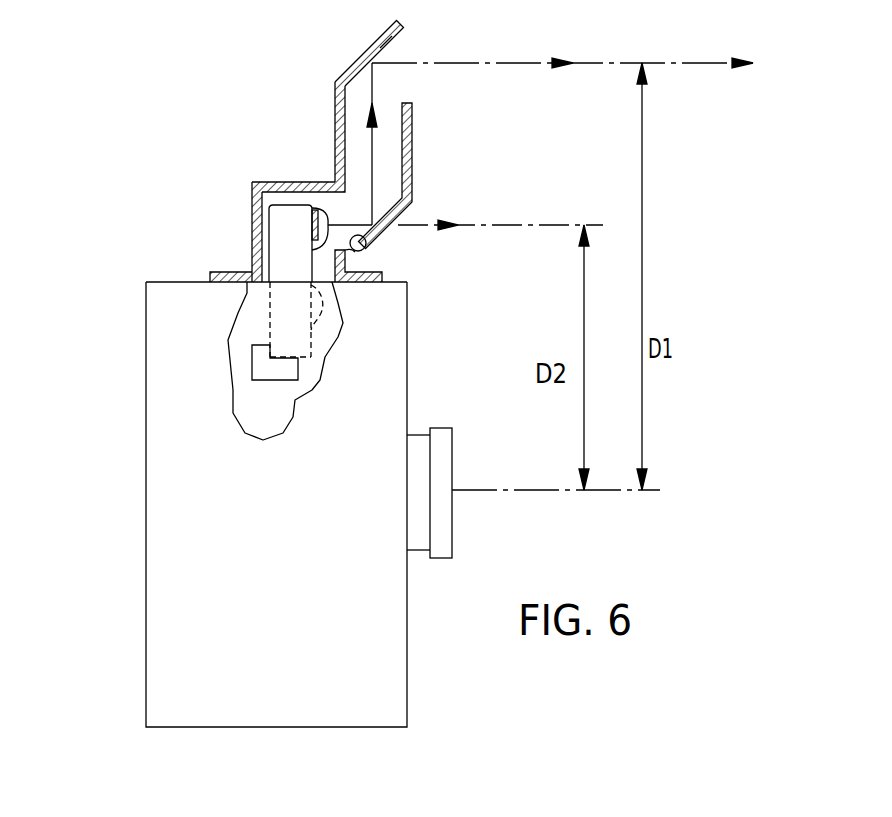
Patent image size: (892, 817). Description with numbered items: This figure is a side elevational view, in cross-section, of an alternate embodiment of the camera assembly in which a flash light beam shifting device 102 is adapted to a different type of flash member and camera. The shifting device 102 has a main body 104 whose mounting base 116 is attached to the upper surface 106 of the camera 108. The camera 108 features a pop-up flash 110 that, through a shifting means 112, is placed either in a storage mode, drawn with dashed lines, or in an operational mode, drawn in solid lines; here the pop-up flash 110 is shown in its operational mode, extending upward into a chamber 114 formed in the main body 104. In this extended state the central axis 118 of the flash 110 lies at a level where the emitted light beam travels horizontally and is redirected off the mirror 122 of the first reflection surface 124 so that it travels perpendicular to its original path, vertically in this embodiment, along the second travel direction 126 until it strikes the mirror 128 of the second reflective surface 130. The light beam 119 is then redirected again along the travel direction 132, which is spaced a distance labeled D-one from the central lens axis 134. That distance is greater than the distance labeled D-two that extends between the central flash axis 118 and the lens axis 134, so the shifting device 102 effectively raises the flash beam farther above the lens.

The flash light beam shifting device 102 is at (286, 160).
The main body 104 is at (246, 194).
The upper surface 106 is at (152, 282).
The camera 108 is at (166, 381).
The pop-up flash 110 is at (305, 258).
The shifting means 112 is at (283, 377).
The chamber 114 is at (255, 237).
The mounting base 116 is at (220, 272).
The central axis 118 is at (520, 225).
The light beam 119 is at (358, 137).
The mirror 122 is at (360, 256).
The first reflection surface 124 is at (385, 195).
The second travel direction 126 is at (372, 88).
The mirror 128 is at (362, 55).
The second reflective surface 130 is at (392, 50).
The travel direction 132 is at (490, 63).
The central lens axis 134 is at (552, 492).